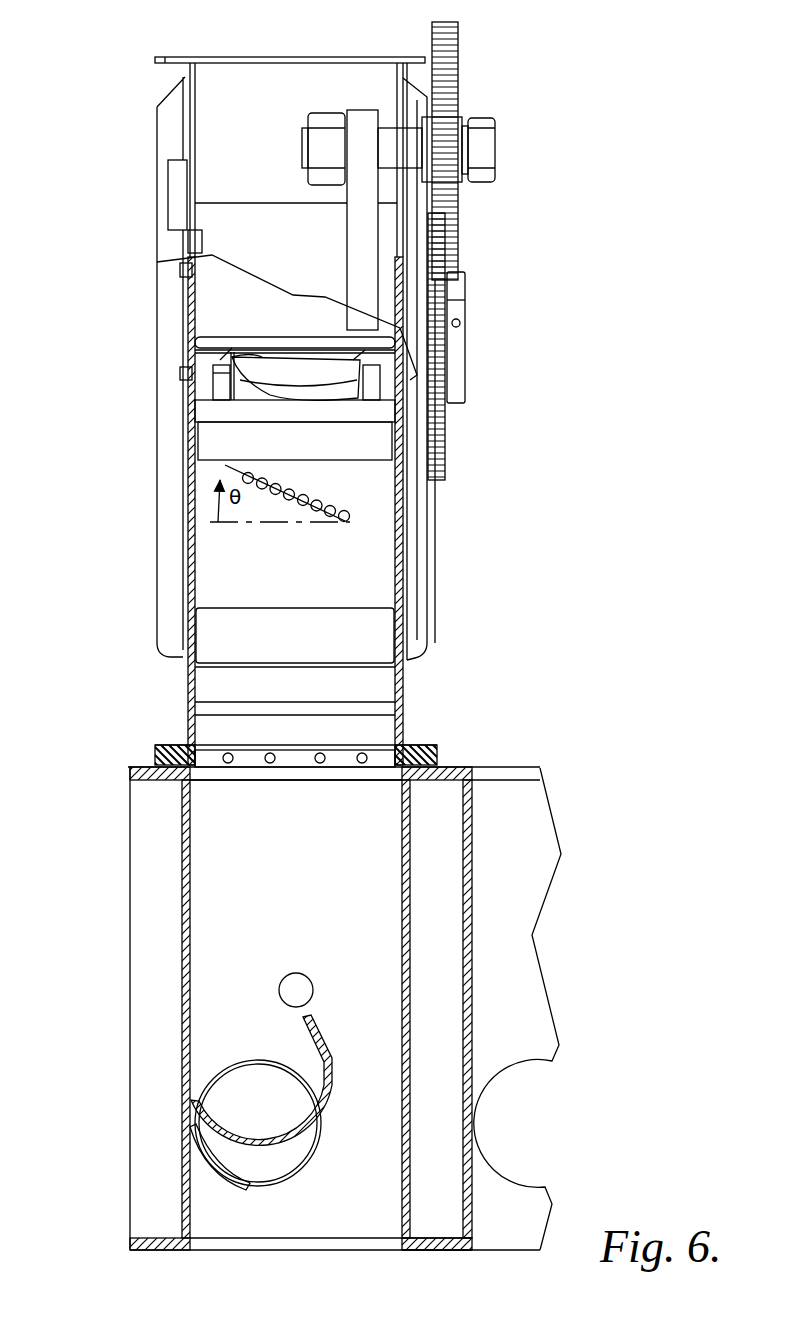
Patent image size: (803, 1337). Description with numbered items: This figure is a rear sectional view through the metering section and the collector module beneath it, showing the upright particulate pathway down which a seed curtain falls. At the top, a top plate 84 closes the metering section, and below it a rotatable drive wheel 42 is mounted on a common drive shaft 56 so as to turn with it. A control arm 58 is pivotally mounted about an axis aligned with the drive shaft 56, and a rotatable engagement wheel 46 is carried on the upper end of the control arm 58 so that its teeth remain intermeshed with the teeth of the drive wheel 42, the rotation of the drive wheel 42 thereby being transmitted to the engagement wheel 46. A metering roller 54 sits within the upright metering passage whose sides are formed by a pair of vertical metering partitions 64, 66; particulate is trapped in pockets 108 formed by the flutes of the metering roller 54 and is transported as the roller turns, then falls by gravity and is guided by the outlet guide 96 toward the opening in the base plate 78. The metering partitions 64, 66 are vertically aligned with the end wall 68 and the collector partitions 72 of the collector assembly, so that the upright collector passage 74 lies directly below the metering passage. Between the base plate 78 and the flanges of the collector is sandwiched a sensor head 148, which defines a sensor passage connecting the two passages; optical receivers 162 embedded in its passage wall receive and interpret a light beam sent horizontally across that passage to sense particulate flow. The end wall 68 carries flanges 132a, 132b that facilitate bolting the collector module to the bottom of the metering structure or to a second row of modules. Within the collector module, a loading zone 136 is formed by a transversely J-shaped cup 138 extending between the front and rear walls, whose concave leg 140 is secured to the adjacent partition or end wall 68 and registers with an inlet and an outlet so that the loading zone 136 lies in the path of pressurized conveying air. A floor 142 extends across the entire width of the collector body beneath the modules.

The drive wheel 42 is at (438, 425).
The engagement wheel 46 is at (446, 53).
The metering roller 54 is at (295, 376).
The drive shaft 56 is at (455, 347).
The control arm 58 is at (358, 143).
The metering partition 64 is at (193, 473).
The metering partition 66 is at (403, 670).
The end wall 68 is at (185, 880).
The collector partition 72 is at (410, 870).
The collector passage 74 is at (320, 920).
The base plate 78 is at (162, 745).
The top plate 84 is at (177, 58).
The outlet guide 96 is at (262, 105).
The pockets 108 is at (260, 386).
The flange 132a is at (137, 770).
The flange 132b is at (143, 1245).
The loading zone 136 is at (246, 1046).
The J-shaped cup 138 is at (324, 1166).
The concave leg 140 is at (290, 1183).
The floor 142 is at (390, 1243).
The sensor head 148 is at (165, 757).
The optical receivers 162 is at (229, 752).